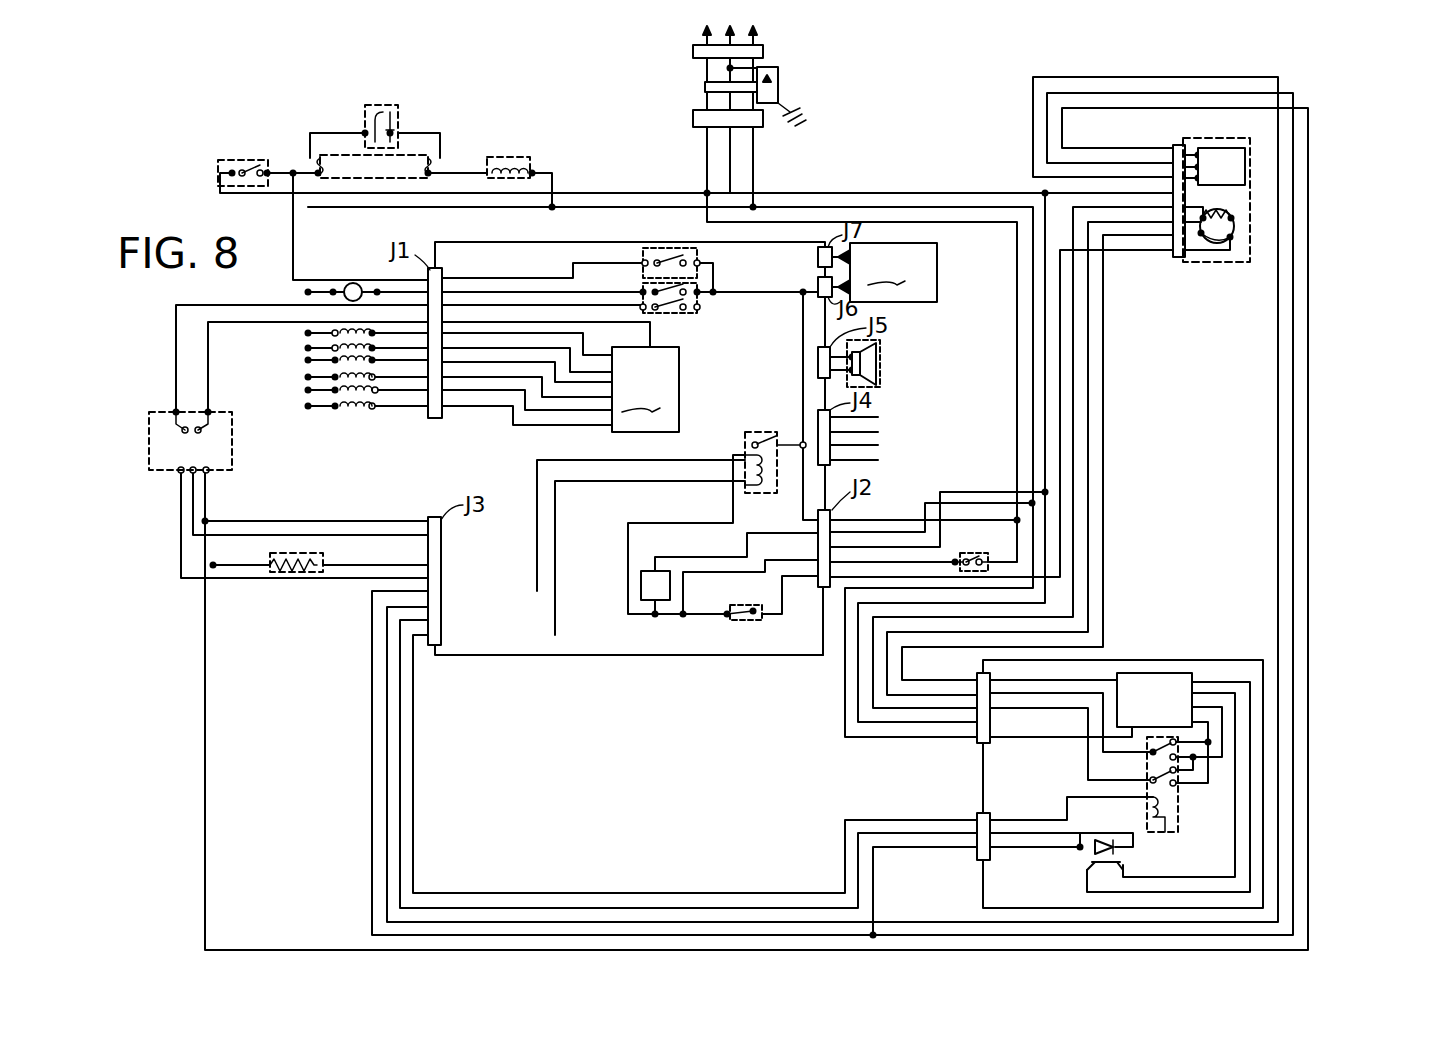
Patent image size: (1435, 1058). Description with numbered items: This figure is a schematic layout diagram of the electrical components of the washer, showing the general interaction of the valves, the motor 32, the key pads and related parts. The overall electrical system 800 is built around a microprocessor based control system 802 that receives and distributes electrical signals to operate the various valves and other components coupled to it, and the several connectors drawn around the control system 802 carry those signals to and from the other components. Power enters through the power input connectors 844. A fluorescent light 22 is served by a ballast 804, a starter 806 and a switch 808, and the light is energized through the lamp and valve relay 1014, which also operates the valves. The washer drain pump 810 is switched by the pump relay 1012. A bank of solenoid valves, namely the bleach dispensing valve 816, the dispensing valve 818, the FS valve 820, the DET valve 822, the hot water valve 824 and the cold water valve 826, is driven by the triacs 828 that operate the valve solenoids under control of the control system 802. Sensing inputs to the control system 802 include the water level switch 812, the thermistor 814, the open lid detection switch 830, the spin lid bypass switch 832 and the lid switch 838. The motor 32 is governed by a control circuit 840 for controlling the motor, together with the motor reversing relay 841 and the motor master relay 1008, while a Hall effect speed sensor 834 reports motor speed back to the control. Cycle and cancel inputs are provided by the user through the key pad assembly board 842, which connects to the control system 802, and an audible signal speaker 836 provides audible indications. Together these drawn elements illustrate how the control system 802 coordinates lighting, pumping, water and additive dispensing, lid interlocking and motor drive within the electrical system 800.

The fluorescent light 22 is at (345, 160).
The motor 32 is at (1252, 138).
The electrical system 800 is at (1352, 360).
The control system 802 is at (478, 658).
The ballast 804 is at (528, 162).
The starter 806 is at (398, 118).
The switch 808 is at (218, 163).
The washer drain pump 810 is at (353, 283).
The water level switch 812 is at (232, 445).
The thermistor 814 is at (278, 575).
The bleach dispensing valve 816 is at (333, 333).
The dispensing valve 818 is at (333, 348).
The FS valve 820 is at (333, 360).
The DET valve 822 is at (333, 377).
The hot water valve 824 is at (353, 410).
The cold water valve 826 is at (375, 393).
The triacs 828 is at (645, 389).
The open lid detection switch 830 is at (641, 585).
The spin lid bypass switch 832 is at (765, 432).
The Hall effect speed sensor 834 is at (1240, 181).
The audible signal speaker 836 is at (881, 368).
The lid switch 838 is at (985, 543).
The control circuit 840 is at (1265, 662).
The motor reversing relay 841 is at (1178, 812).
The key pad assembly board 842 is at (893, 272).
The power input connectors 844 is at (797, 52).
The motor master relay 1008 is at (750, 622).
The pump relay 1012 is at (700, 262).
The lamp and valve relay 1014 is at (720, 292).